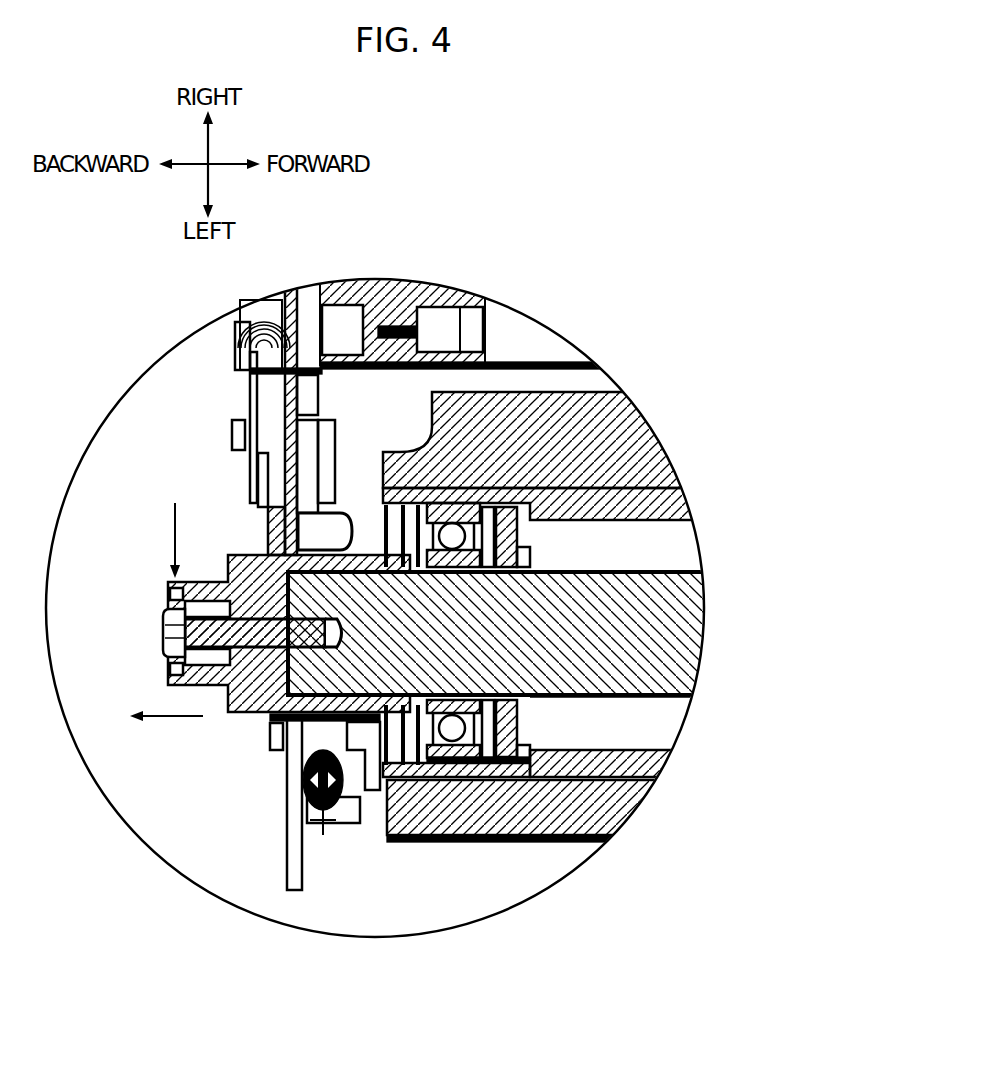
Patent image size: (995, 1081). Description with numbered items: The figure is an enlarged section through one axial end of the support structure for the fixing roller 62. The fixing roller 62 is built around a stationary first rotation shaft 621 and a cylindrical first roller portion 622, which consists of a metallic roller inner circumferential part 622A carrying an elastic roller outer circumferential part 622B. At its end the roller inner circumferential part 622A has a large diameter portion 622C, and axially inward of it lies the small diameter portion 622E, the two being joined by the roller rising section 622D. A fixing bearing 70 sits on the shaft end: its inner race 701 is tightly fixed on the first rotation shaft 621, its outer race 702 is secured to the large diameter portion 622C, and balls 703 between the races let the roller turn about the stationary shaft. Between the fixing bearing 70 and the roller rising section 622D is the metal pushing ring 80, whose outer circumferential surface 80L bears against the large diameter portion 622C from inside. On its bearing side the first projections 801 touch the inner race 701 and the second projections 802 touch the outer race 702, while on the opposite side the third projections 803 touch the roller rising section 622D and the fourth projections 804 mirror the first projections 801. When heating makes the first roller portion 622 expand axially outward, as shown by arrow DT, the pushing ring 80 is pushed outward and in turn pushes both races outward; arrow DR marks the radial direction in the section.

The fixing roller 62 is at (347, 853).
The first rotation shaft 621 is at (640, 636).
The first roller portion 622 is at (577, 873).
The roller inner circumferential part 622A is at (600, 766).
The roller outer circumferential part 622B is at (598, 803).
The large diameter portion 622C is at (455, 770).
The roller rising section 622D is at (565, 503).
The small diameter portion 622E is at (617, 742).
The fixing bearing 70 is at (380, 757).
The inner race 701 is at (445, 522).
The outer race 702 is at (440, 745).
The balls 703 is at (458, 505).
The pushing ring 80 is at (527, 717).
The outer circumferential surface 80L is at (535, 507).
The first projections 801 is at (500, 520).
The second projections 802 is at (480, 752).
The third projections 803 is at (505, 740).
The fourth projections 804 is at (533, 562).
The radial direction DR is at (173, 545).
The arrow DT is at (175, 718).